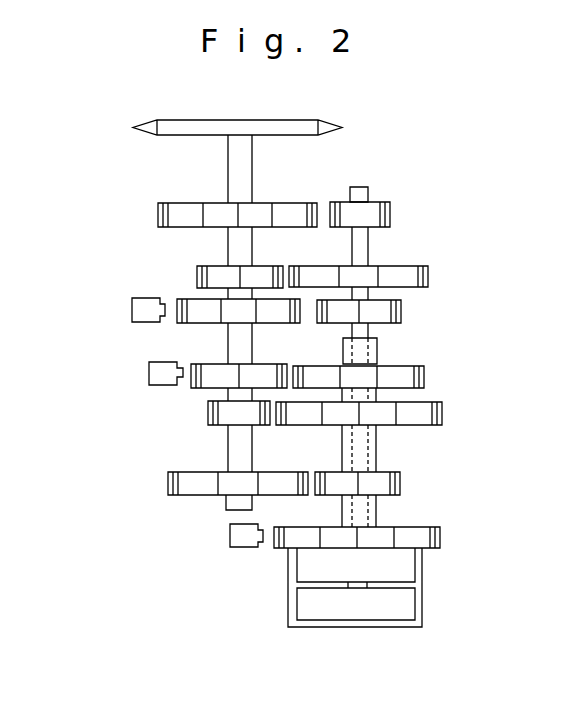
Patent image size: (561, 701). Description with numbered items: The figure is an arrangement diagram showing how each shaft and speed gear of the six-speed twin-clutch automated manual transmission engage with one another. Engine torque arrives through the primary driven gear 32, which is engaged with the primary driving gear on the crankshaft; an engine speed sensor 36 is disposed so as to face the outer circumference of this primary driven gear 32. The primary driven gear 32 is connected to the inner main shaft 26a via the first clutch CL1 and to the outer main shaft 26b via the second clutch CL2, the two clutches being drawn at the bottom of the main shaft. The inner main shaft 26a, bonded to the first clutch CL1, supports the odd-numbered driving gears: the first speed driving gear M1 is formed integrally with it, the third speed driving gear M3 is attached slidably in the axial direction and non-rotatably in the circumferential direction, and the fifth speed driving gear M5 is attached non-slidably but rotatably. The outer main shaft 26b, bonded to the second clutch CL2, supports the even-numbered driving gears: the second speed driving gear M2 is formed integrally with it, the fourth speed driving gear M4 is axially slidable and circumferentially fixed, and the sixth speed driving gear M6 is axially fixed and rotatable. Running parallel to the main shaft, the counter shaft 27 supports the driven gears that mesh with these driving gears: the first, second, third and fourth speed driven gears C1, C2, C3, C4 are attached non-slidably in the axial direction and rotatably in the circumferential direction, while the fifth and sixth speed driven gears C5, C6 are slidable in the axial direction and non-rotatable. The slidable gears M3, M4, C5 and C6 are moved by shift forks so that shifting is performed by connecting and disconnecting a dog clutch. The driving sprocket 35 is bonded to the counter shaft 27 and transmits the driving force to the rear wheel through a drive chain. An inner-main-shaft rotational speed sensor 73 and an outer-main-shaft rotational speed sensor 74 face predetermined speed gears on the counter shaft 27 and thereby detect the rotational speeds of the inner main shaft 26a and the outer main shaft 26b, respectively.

The driving sprocket 35 is at (195, 127).
The counter shaft 27 is at (237, 452).
The inner main shaft 26a is at (362, 197).
The outer main shaft 26b is at (370, 347).
The first speed driven gear C1 is at (162, 218).
The first speed driving gear M1 is at (388, 215).
The fifth speed driven gear C5 is at (202, 278).
The fifth speed driving gear M5 is at (423, 280).
The inner-main-shaft rotational speed sensor 73 is at (132, 316).
The third speed driven gear C3 is at (193, 318).
The third speed driving gear M3 is at (400, 312).
The outer-main-shaft rotational speed sensor 74 is at (149, 377).
The fourth speed driven gear C4 is at (212, 372).
The fourth speed driving gear M4 is at (424, 378).
The sixth speed driven gear C6 is at (210, 412).
The sixth speed driving gear M6 is at (440, 410).
The second speed driven gear C2 is at (177, 485).
The second speed driving gear M2 is at (395, 482).
The engine speed sensor 36 is at (230, 537).
The primary driven gear 32 is at (282, 542).
The second clutch CL2 is at (398, 567).
The first clutch CL1 is at (393, 605).